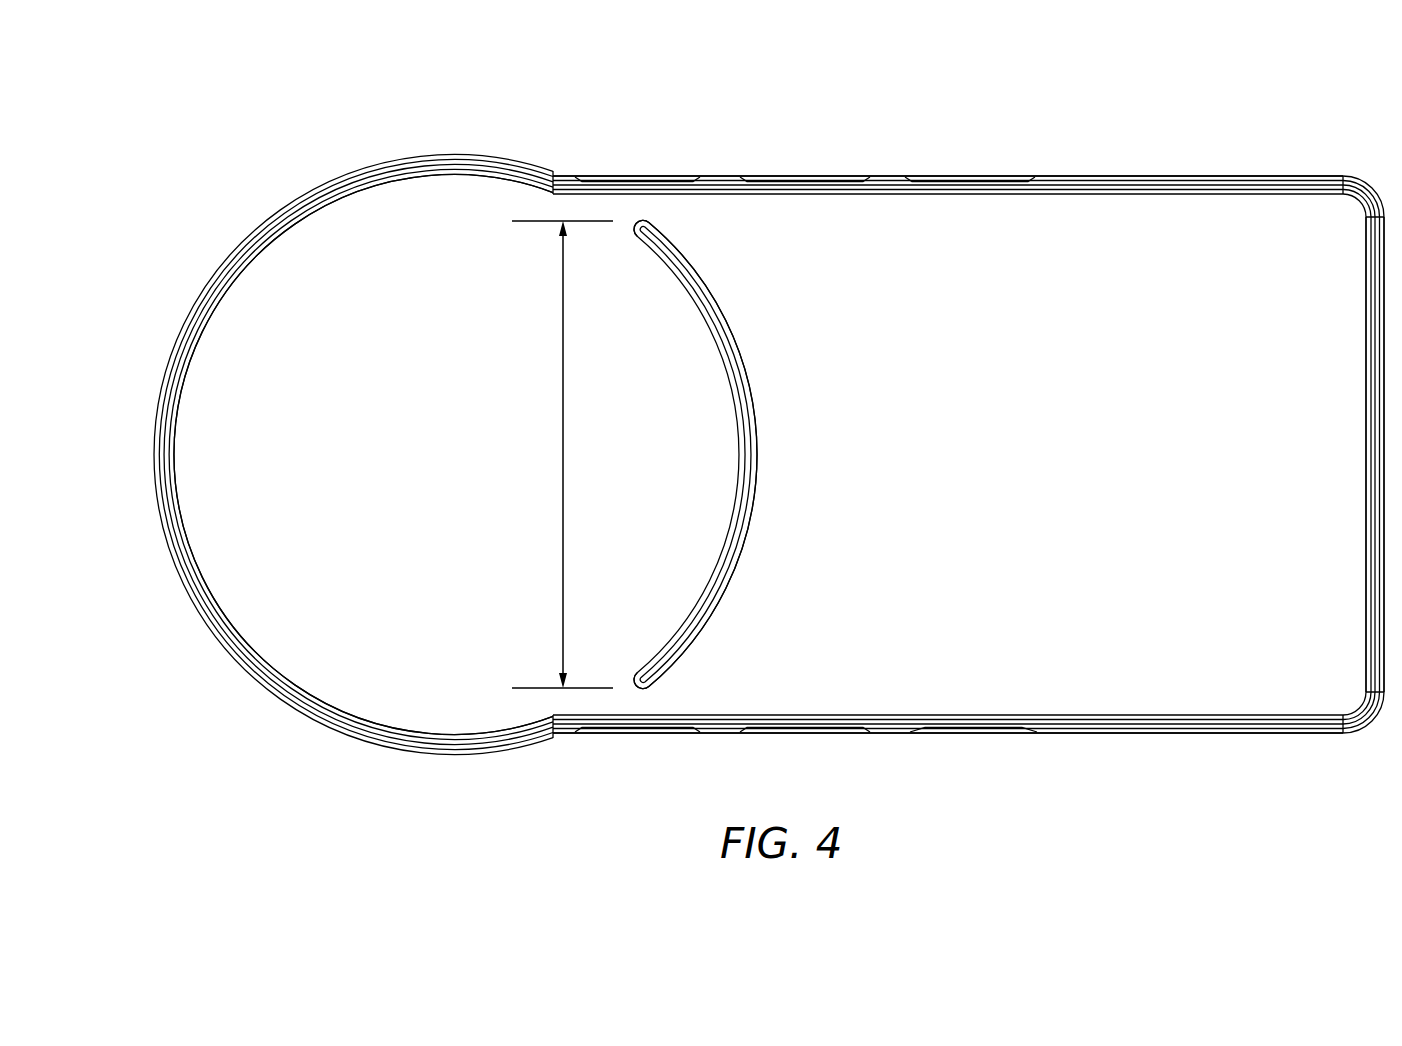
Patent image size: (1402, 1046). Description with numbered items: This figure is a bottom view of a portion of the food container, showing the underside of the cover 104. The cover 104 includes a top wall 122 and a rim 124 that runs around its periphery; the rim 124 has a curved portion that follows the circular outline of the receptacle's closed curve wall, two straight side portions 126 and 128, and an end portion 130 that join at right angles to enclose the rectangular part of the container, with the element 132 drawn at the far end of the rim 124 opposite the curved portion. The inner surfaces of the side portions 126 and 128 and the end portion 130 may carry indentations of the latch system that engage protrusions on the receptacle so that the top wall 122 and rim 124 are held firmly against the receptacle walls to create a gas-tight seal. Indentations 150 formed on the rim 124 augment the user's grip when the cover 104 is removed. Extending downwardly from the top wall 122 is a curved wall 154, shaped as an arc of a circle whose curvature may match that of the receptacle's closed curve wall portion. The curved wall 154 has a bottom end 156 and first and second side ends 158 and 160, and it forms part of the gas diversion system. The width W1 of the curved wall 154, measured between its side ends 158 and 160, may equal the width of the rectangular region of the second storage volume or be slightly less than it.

The cover 104 is at (1122, 157).
The top wall 122 is at (1095, 481).
The rim 124 is at (335, 730).
The side portion 126 is at (224, 618).
The side portion 128 is at (1163, 194).
The end portion 130 is at (1170, 715).
The end rail 132 is at (1366, 476).
The indentations 150 is at (973, 733).
The curved wall 154 is at (792, 373).
The bottom end 156 is at (752, 463).
The first side end 158 is at (643, 690).
The second side end 160 is at (643, 222).
The width W1 is at (562, 455).